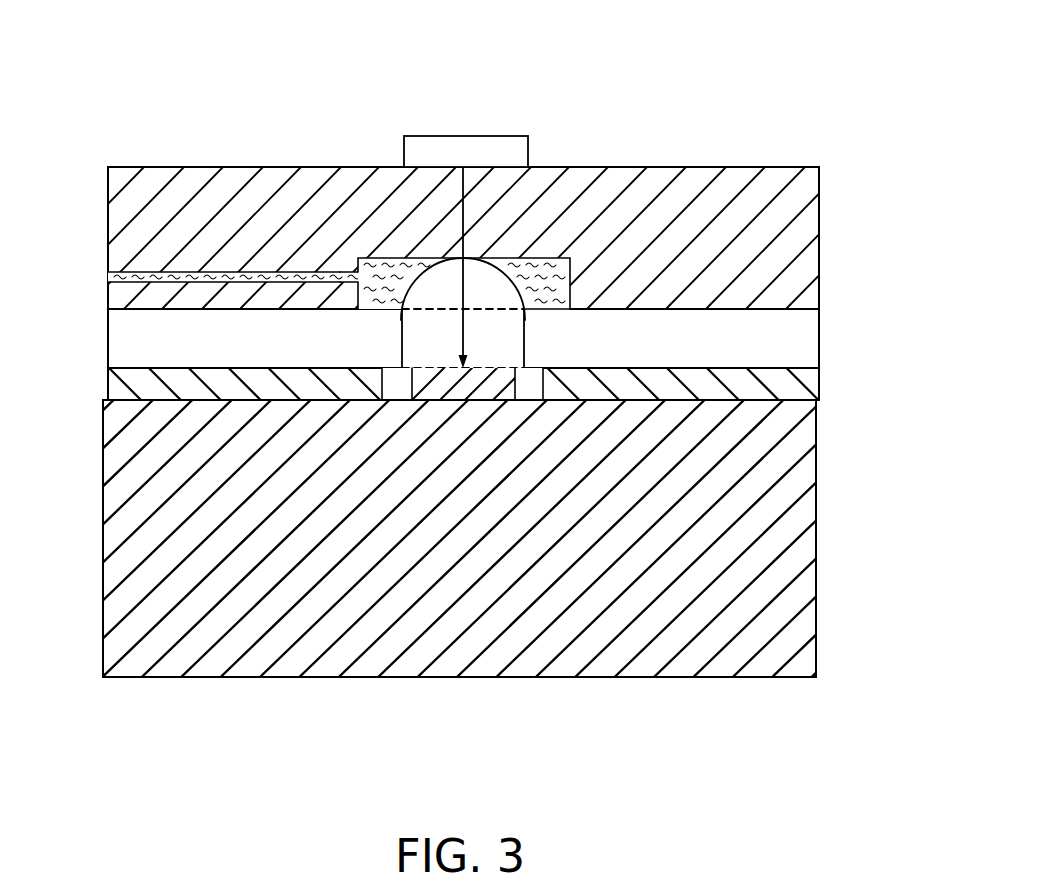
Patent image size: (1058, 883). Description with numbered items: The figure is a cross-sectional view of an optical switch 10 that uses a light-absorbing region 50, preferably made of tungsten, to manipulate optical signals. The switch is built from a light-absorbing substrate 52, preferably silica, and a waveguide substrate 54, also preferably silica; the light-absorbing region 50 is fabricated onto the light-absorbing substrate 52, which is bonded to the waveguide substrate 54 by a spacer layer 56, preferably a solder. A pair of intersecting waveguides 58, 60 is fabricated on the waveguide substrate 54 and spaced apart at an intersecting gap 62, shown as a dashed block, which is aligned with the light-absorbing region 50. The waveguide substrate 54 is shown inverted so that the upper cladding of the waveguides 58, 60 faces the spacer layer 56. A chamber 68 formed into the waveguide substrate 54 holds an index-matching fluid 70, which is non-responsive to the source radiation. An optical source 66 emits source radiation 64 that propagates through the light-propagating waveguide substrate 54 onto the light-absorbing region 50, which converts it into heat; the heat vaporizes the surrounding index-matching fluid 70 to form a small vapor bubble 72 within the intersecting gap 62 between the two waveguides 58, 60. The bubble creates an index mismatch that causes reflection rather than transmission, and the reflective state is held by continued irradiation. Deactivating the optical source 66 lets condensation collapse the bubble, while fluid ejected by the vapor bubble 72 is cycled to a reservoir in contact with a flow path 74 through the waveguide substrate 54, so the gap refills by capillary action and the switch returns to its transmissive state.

The optical switch 10 is at (529, 386).
The light-absorbing region 50 is at (463, 387).
The light-absorbing substrate 52 is at (803, 625).
The waveguide substrate 54 is at (810, 262).
The spacer layer 56 is at (810, 388).
The waveguide 58 is at (117, 337).
The waveguide 60 is at (807, 342).
The intersecting gap 62 is at (492, 342).
The source radiation 64 is at (465, 212).
The optical source 66 is at (463, 136).
The chamber 68 is at (571, 309).
The index-matching fluid 70 is at (363, 268).
The vapor bubble 72 is at (437, 263).
The flow path 74 is at (104, 276).